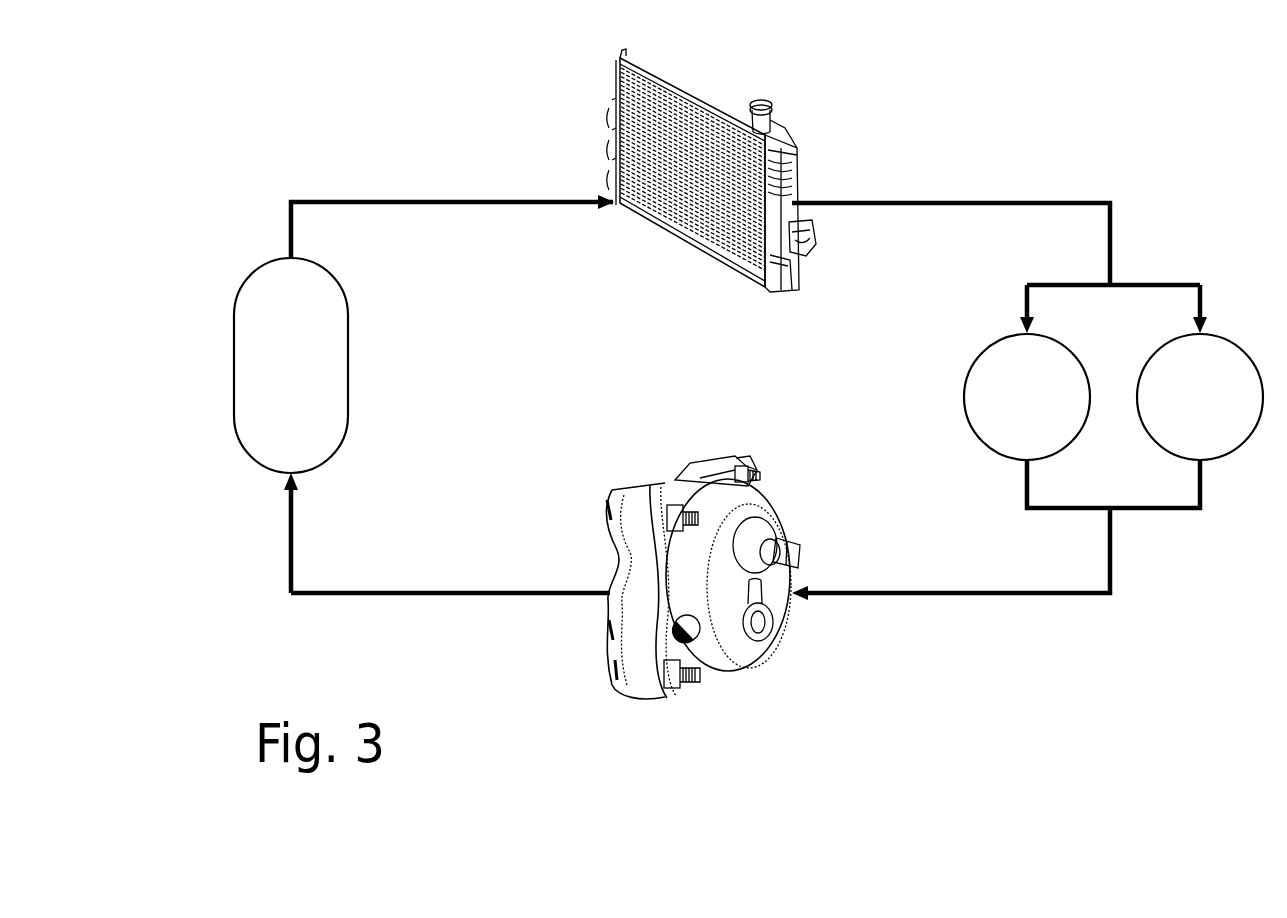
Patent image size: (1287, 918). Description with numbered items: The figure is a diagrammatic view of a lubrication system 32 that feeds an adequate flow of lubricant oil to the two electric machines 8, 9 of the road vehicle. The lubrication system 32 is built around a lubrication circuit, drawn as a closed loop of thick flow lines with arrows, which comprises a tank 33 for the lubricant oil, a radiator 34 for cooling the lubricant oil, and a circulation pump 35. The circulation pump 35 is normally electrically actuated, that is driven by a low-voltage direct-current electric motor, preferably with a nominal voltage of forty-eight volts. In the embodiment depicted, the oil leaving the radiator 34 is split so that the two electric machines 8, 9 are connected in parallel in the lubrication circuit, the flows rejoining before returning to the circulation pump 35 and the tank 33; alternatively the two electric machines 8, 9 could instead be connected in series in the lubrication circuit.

The lubrication system 32 is at (1122, 678).
The tank 33 is at (291, 365).
The radiator 34 is at (693, 183).
The circulation pump 35 is at (728, 650).
The electric machine 9 is at (1027, 397).
The electric machine 8 is at (1200, 397).